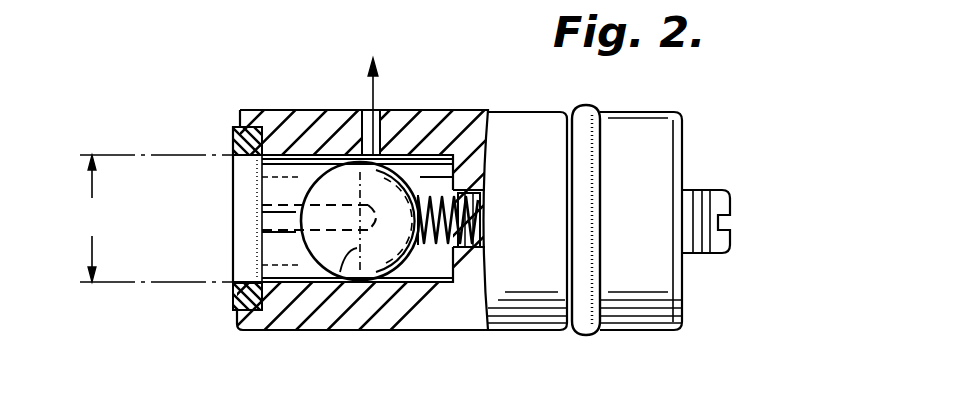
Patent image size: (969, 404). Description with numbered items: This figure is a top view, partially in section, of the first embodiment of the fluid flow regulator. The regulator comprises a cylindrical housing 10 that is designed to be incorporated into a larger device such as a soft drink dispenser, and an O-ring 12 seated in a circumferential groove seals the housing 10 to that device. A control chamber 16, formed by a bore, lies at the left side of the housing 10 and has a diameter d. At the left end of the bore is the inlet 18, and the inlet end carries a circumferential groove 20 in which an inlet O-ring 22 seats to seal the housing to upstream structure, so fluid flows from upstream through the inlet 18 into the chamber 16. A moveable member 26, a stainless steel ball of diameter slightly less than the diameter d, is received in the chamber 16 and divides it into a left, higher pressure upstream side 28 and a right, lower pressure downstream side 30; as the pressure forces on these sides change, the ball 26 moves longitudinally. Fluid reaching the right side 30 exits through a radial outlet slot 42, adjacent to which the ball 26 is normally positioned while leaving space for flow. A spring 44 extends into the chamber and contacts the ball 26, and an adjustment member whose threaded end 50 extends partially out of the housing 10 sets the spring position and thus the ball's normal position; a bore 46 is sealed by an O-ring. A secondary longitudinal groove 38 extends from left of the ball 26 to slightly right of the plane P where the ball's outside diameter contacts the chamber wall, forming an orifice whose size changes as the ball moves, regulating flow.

The housing 10 is at (688, 100).
The O-ring 12 is at (592, 337).
The control chamber 16 is at (312, 162).
The inlet 18 is at (222, 198).
The circumferential groove 20 is at (237, 138).
The inlet O-ring 22 is at (233, 298).
The moveable member 26 is at (392, 250).
The upstream side 28 is at (273, 172).
The downstream side 30 is at (443, 277).
The secondary longitudinal groove 38 is at (289, 222).
The radial outlet slot 42 is at (378, 140).
The spring 44 is at (478, 206).
The bore 46 is at (482, 232).
The end of adjustment member 50 is at (733, 210).
The plane P is at (334, 280).
The diameter d is at (156, 218).